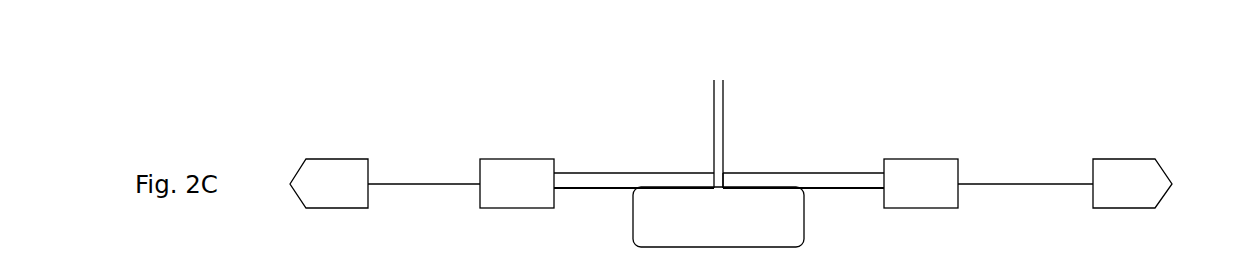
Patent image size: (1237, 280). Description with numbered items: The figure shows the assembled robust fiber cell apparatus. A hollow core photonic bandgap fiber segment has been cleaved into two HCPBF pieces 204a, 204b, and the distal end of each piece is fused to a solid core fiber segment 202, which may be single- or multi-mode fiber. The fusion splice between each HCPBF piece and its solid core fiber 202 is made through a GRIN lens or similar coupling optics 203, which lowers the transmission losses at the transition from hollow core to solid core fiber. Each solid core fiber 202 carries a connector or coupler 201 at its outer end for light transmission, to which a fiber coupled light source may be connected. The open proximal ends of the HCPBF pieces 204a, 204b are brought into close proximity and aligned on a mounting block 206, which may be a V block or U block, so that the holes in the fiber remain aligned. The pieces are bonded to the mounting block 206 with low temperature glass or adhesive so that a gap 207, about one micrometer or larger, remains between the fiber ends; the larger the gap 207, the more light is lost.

The connector 201 is at (338, 157).
The solid core fiber segment 202 is at (438, 185).
The GRIN lens 203 is at (544, 157).
The HCPBF piece 204a is at (627, 173).
The HCPBF piece 204b is at (807, 173).
The mounting block 206 is at (740, 231).
The gap 207 is at (753, 97).